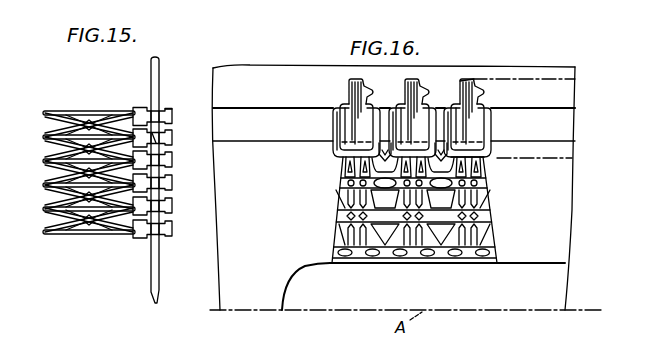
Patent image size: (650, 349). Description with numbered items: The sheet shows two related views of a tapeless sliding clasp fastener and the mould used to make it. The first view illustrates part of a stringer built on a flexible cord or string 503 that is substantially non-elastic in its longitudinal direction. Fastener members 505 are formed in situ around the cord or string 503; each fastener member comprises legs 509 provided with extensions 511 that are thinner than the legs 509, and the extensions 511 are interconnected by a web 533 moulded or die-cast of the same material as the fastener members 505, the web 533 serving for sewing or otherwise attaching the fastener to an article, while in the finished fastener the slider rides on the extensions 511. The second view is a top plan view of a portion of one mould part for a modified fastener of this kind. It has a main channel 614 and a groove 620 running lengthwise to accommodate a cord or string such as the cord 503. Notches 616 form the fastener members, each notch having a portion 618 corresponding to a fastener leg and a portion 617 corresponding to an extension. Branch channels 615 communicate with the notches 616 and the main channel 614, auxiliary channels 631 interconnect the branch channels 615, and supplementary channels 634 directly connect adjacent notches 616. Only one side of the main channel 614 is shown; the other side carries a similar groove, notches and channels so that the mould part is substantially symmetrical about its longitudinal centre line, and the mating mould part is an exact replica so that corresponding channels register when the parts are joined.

In FIG. 15, the flexible cord or string 503 is at (159, 73).
In FIG. 15, the fastener members 505 is at (168, 118).
In FIG. 15, the legs 509 is at (153, 137).
In FIG. 15, the extensions 511 is at (136, 107).
In FIG. 15, the web 533 is at (72, 111).
In FIG. 16, the main channel 614 is at (556, 288).
In FIG. 16, the branch channels 615 is at (467, 227).
In FIG. 16, the notches 616 is at (484, 91).
In FIG. 16, the portion corresponding to an extension 617 is at (474, 156).
In FIG. 16, the portion corresponding to a fastener leg 618 is at (473, 126).
In FIG. 16, the groove 620 is at (565, 132).
In FIG. 16, the auxiliary channels 631 is at (342, 182).
In FIG. 16, the supplementary channels 634 is at (383, 156).